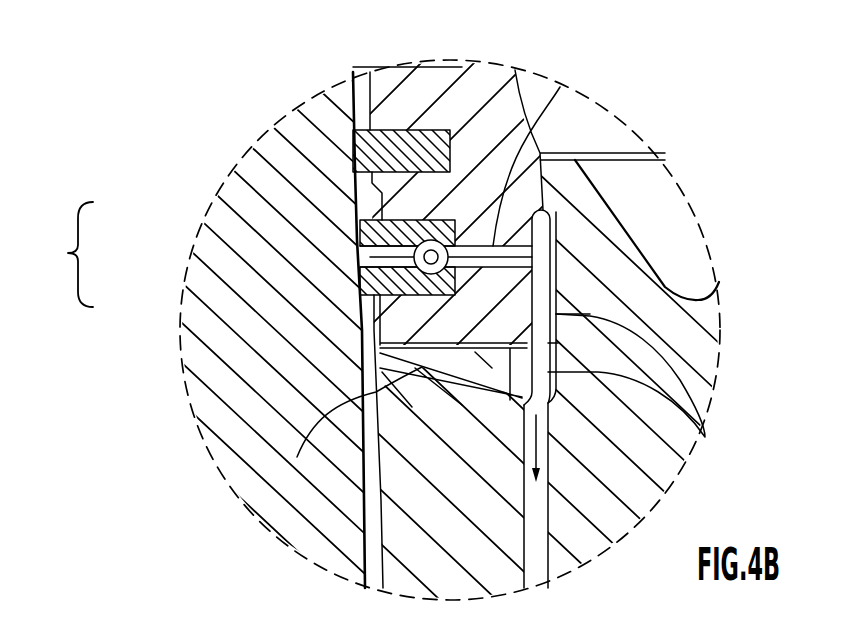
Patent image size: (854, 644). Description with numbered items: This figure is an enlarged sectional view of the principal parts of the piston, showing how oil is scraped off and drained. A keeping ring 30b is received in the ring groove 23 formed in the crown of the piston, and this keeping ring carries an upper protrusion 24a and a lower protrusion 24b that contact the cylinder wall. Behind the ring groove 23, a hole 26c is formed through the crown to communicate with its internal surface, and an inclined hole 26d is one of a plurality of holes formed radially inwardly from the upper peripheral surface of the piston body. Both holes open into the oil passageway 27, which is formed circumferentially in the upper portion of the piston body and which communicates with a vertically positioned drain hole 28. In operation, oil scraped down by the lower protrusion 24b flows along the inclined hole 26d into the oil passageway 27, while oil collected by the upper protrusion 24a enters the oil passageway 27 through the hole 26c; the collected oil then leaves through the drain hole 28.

The ring groove 23 is at (353, 149).
The upper protrusion 24a is at (357, 226).
The lower holding member 24b is at (357, 288).
The keeping ring 30b is at (59, 254).
The hole 26c is at (560, 87).
The inclined hole 26d is at (297, 457).
The oil passageway 27 is at (703, 437).
The drain hole 28 is at (548, 578).